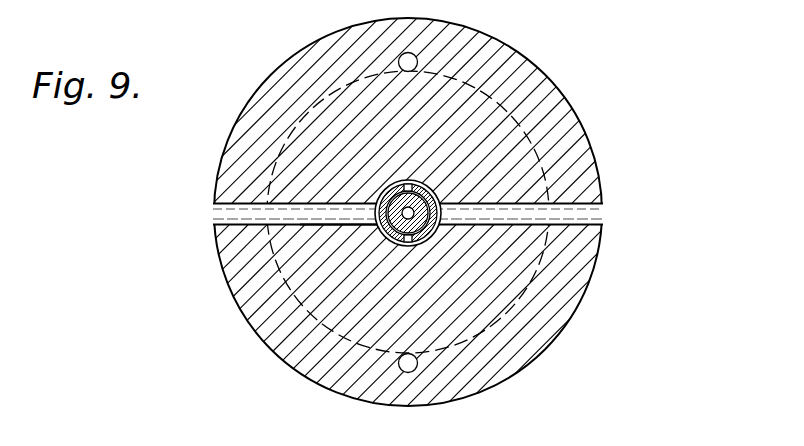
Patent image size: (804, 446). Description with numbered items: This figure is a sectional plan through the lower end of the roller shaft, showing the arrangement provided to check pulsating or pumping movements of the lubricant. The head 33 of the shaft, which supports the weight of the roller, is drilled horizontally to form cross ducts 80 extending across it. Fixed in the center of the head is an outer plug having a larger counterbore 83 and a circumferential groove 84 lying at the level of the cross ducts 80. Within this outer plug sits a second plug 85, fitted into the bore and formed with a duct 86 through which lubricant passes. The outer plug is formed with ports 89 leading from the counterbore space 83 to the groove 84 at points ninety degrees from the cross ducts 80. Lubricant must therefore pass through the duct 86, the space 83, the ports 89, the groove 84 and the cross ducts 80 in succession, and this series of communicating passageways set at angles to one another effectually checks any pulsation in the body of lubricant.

The head 33 is at (288, 345).
The cross ducts 80 is at (242, 217).
The counterbore 83 is at (352, 232).
The circumferential groove 84 is at (441, 202).
The plug 85 is at (437, 198).
The duct 86 is at (433, 228).
The ports 89 is at (428, 185).